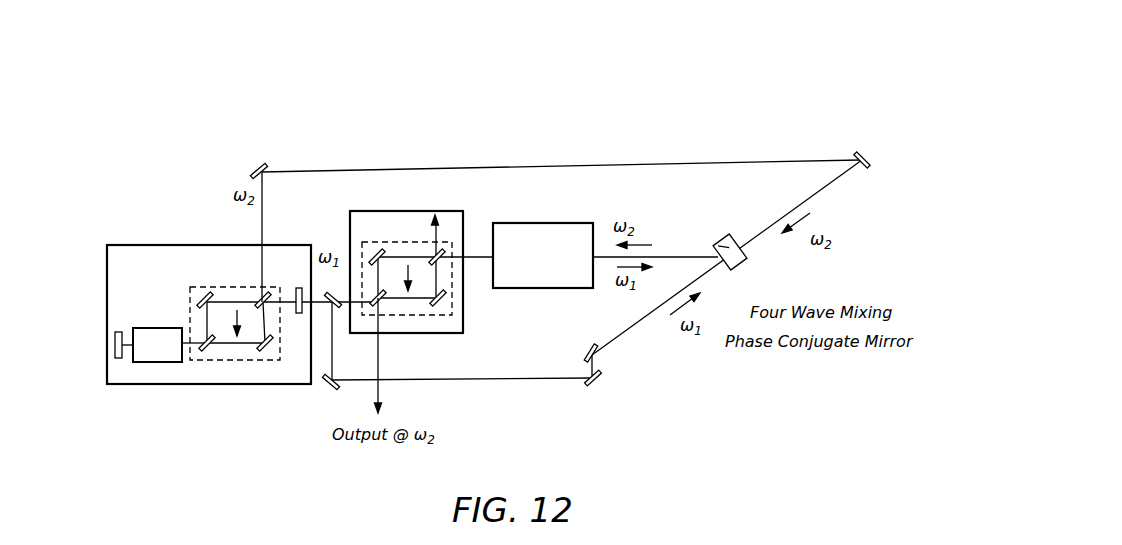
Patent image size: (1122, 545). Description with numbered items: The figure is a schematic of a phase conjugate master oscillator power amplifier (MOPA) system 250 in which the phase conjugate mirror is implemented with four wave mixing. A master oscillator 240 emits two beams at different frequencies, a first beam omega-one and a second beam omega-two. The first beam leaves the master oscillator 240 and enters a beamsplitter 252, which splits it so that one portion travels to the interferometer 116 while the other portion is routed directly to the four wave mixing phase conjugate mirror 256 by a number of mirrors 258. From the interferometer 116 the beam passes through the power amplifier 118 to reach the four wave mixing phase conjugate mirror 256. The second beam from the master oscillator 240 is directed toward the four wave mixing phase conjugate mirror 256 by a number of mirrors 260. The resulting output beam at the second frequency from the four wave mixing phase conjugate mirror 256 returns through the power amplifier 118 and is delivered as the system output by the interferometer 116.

The laser system 250 is at (746, 128).
The master oscillator 240 is at (156, 245).
The mirrors 260 is at (257, 165).
The interferometer 116 is at (464, 316).
The power amplifier 118 is at (546, 222).
The four wave mixing phase conjugate mirror 256 is at (725, 239).
The beamsplitter 252 is at (336, 306).
The mirrors 258 is at (330, 388).